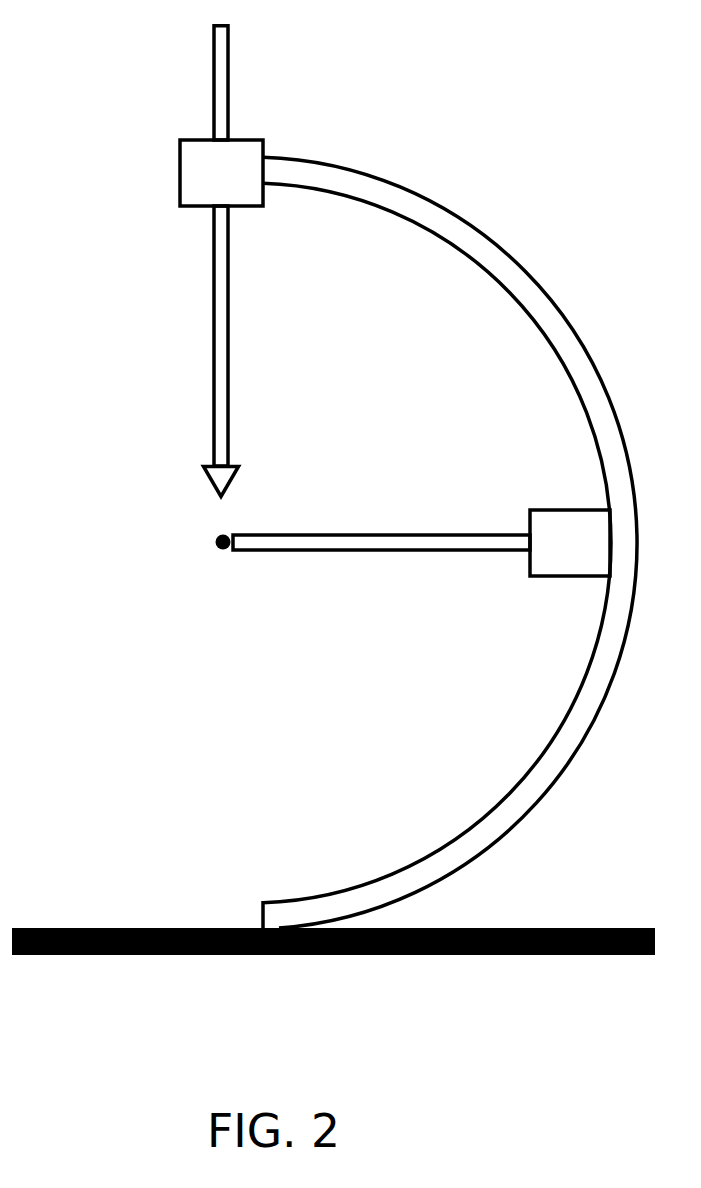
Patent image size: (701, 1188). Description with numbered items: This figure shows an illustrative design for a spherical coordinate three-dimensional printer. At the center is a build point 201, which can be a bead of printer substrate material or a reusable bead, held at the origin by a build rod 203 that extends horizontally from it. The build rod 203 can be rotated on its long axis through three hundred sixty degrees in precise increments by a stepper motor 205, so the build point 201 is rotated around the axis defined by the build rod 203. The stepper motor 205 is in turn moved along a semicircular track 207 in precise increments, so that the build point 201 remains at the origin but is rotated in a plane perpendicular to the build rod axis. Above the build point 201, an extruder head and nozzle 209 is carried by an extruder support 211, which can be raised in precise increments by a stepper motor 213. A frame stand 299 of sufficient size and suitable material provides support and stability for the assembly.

The build point 201 is at (205, 555).
The build rod 203 is at (381, 563).
The stepper motor 205 is at (558, 561).
The semicircular track 207 is at (450, 542).
The extruder head and nozzle 209 is at (204, 483).
The extruder support 211 is at (200, 246).
The stepper motor 213 is at (201, 173).
The frame stand 299 is at (333, 927).